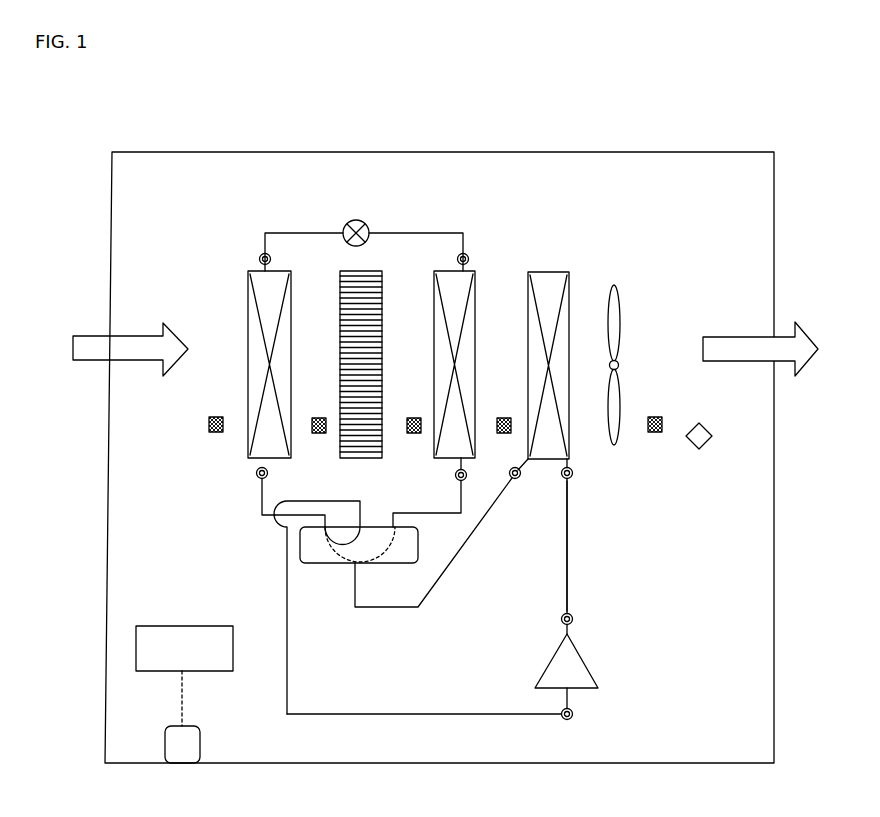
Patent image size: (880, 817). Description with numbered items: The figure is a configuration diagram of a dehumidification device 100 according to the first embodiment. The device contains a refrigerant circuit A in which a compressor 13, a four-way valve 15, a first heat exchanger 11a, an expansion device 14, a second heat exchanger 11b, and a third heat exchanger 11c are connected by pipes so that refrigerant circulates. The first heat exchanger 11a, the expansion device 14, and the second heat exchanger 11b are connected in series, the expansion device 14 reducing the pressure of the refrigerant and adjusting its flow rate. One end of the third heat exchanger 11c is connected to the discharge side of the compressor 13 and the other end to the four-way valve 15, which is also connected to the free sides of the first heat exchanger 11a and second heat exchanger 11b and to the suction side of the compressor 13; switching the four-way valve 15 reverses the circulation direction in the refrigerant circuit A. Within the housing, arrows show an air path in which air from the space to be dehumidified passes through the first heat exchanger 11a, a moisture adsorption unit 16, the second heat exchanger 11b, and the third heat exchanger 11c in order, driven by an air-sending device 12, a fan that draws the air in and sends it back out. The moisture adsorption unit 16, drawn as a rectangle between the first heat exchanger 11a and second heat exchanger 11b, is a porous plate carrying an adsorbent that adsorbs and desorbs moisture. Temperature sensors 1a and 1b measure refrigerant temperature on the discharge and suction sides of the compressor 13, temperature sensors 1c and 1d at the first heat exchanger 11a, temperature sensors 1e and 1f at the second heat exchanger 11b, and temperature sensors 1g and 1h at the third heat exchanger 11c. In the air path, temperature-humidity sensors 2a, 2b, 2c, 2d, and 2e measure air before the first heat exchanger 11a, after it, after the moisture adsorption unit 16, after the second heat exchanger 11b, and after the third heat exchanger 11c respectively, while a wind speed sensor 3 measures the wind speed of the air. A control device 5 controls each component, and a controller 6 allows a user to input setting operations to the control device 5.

The dehumidification device 100 is at (439, 423).
The expansion device 14 is at (382, 203).
The temperature sensor 1a is at (597, 595).
The temperature sensor 1b is at (606, 730).
The temperature sensor 1c is at (242, 507).
The temperature sensor 1d is at (221, 268).
The temperature sensor 1e is at (424, 478).
The temperature sensor 1f is at (488, 235).
The temperature sensor 1g is at (604, 463).
The temperature sensor 1h is at (535, 500).
The first heat exchanger 11a is at (294, 359).
The second heat exchanger 11b is at (480, 364).
The third heat exchanger 11c is at (580, 345).
The moisture adsorption unit 16 is at (384, 364).
The air-sending device 12 is at (640, 365).
The temperature-humidity sensor 2a is at (175, 428).
The temperature-humidity sensor 2b is at (311, 392).
The temperature-humidity sensor 2c is at (408, 392).
The temperature-humidity sensor 2d is at (496, 395).
The temperature-humidity sensor 2e is at (685, 400).
The wind speed sensor 3 is at (721, 412).
The refrigerant circuit A is at (602, 546).
The compressor 13 is at (589, 648).
The four-way valve 15 is at (359, 579).
The control device 5 is at (184, 655).
The controller 6 is at (203, 726).